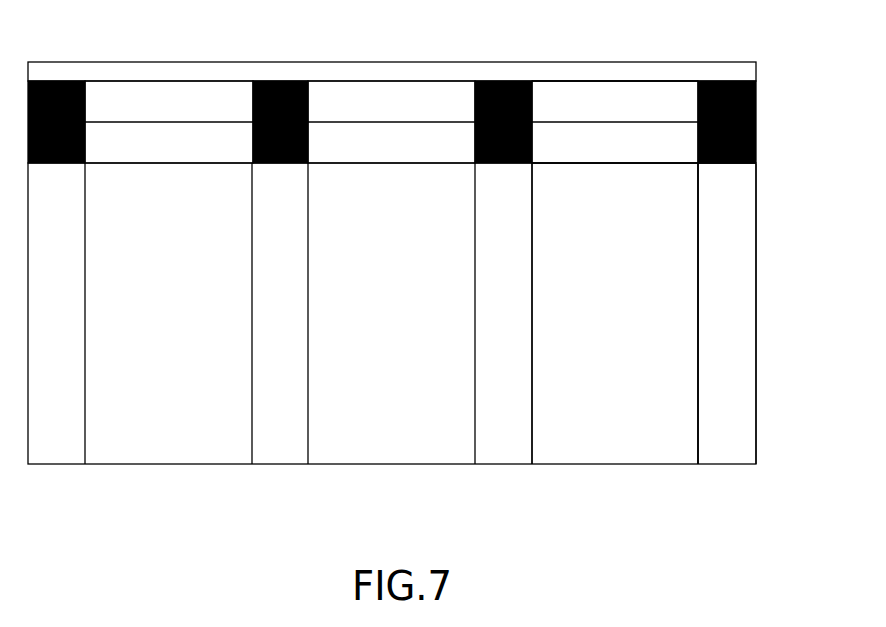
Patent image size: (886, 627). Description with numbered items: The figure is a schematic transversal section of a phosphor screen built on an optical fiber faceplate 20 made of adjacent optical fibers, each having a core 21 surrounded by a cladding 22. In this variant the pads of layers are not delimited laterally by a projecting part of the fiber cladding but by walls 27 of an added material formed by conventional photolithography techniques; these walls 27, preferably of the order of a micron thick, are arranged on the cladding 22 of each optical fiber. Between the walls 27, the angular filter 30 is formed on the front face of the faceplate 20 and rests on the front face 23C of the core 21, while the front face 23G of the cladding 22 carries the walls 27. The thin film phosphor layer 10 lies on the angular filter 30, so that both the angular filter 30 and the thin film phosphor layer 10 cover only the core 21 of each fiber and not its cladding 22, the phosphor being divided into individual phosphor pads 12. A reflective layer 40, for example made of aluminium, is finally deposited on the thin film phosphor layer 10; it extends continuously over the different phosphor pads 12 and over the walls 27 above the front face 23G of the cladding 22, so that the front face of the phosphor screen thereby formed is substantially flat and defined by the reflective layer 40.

The thin film phosphor layer 10 is at (384, 110).
The phosphor pads 12 is at (682, 103).
The optical fiber faceplate 20 is at (773, 339).
The core 21 is at (609, 445).
The cladding 22 is at (728, 445).
The front face of the core 23C is at (638, 163).
The front face of the cladding 23G is at (737, 163).
The walls 27 is at (740, 130).
The angular filter 30 is at (572, 140).
The reflective layer 40 is at (641, 72).